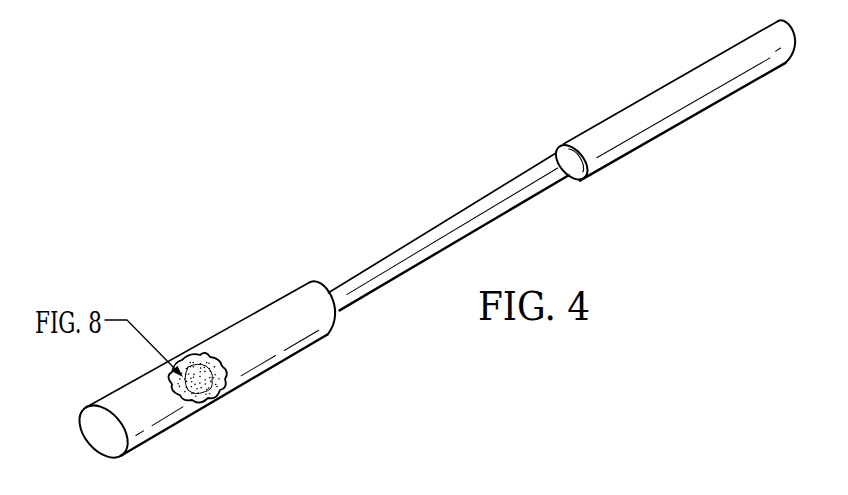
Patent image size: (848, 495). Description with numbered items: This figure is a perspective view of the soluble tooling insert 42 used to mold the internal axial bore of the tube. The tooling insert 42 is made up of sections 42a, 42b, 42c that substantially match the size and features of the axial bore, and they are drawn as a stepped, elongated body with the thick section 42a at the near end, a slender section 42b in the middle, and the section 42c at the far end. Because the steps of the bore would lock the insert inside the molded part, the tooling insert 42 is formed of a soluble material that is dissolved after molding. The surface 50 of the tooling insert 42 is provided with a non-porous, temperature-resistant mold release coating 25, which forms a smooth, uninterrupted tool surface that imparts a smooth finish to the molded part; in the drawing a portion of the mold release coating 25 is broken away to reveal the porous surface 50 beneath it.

The tooling insert 42 is at (441, 119).
The section of the tooling insert 42a is at (223, 331).
The section of the tooling insert 42b is at (443, 222).
The section of the tooling insert 42c is at (665, 88).
The mold release coating 25 is at (292, 310).
The surface of the tooling insert 50 is at (227, 381).